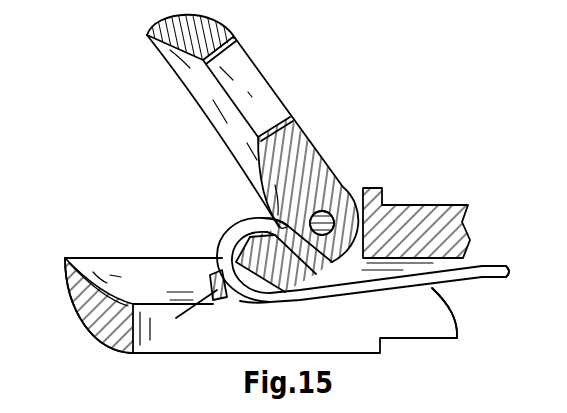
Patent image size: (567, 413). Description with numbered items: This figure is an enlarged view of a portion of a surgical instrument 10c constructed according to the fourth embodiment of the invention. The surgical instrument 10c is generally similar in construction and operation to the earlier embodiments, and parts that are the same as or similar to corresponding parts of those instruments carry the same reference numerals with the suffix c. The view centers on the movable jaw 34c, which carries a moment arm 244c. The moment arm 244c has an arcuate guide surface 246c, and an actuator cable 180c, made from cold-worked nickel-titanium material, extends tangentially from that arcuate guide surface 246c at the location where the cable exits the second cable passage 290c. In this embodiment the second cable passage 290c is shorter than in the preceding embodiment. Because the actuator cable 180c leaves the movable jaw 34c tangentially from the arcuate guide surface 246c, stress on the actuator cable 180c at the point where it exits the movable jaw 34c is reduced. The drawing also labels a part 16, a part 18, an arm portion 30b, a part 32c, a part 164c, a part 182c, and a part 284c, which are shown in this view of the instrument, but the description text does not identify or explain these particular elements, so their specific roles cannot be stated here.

The surgical instrument 10c is at (122, 185).
The bracket 16 is at (317, 250).
The support 18 is at (464, 229).
The arm 30b is at (168, 121).
The strap 32c is at (267, 80).
The movable jaw 34c is at (77, 318).
The pivot pin 164c is at (331, 213).
The actuator cable 180c is at (494, 282).
The neck portion 182c is at (420, 286).
The moment arm 244c is at (272, 297).
The arcuate guide surface 246c is at (257, 302).
The clip band 284c is at (279, 224).
The second cable passage 290c is at (219, 258).